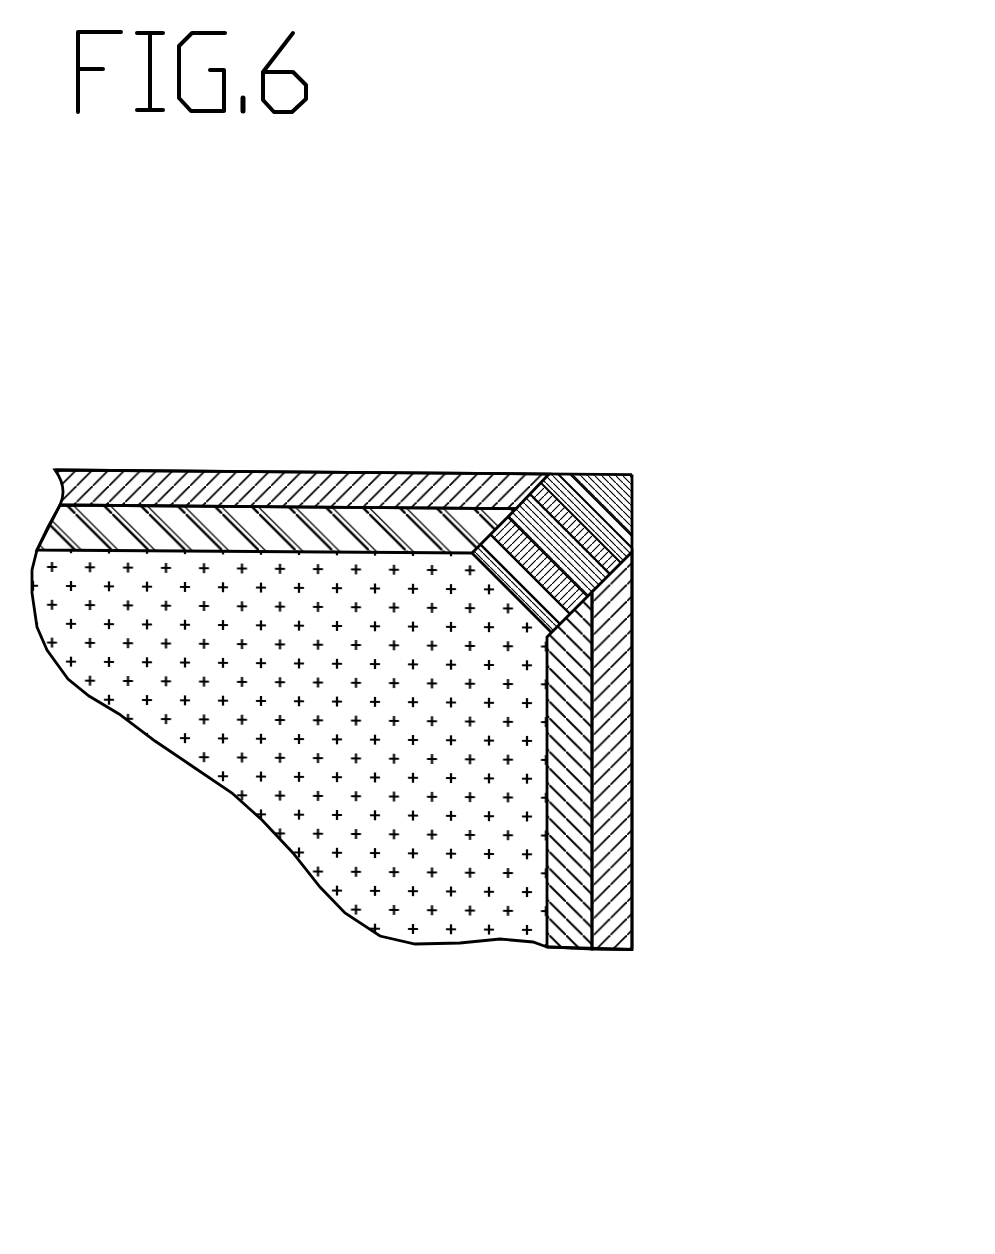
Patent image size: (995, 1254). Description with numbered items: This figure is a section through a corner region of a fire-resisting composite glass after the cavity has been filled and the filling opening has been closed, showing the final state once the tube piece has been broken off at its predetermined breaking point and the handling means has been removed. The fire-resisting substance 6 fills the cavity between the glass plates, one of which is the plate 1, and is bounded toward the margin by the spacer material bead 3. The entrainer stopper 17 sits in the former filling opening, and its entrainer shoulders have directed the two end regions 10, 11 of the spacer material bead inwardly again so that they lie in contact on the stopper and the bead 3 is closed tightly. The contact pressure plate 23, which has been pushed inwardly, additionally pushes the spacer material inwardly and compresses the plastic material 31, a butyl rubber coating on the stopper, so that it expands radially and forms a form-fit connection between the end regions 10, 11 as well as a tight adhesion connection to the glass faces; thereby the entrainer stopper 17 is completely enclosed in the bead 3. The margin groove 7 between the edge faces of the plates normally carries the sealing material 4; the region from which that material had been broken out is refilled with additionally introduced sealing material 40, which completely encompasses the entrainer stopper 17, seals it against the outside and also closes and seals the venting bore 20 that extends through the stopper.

The plate 1 is at (231, 790).
The spacer material bead 3 is at (112, 525).
The sealing material 4 is at (168, 478).
The fire-resisting substance 6 is at (390, 830).
The margin groove 7 is at (567, 495).
The end region of spacer material bead 10 is at (522, 515).
The end region of spacer material bead 11 is at (593, 650).
The entrainer stopper 17 is at (552, 606).
The bore 20 is at (633, 498).
The contact pressure plate 23 is at (633, 540).
The plastic material 31 is at (500, 512).
The sealing material 40 is at (596, 505).